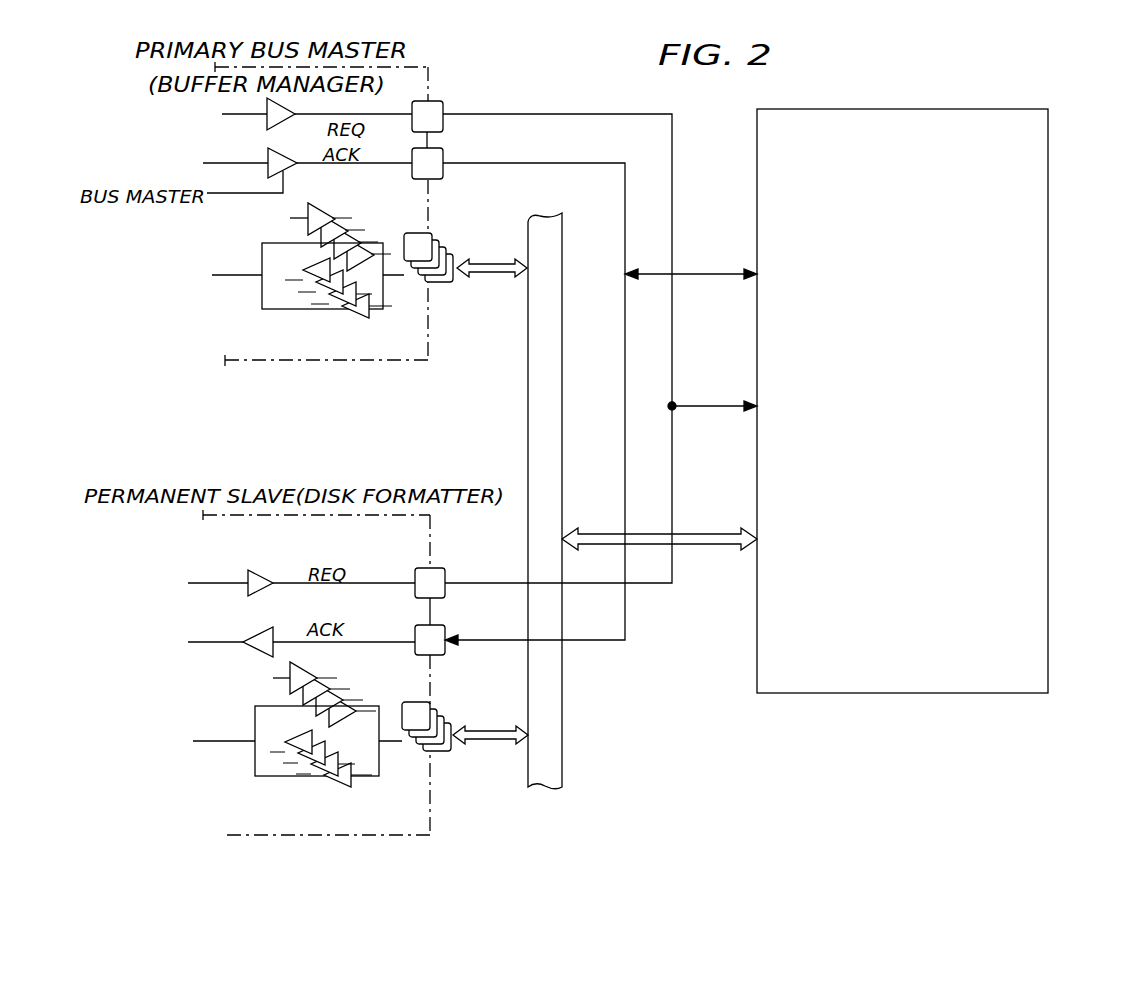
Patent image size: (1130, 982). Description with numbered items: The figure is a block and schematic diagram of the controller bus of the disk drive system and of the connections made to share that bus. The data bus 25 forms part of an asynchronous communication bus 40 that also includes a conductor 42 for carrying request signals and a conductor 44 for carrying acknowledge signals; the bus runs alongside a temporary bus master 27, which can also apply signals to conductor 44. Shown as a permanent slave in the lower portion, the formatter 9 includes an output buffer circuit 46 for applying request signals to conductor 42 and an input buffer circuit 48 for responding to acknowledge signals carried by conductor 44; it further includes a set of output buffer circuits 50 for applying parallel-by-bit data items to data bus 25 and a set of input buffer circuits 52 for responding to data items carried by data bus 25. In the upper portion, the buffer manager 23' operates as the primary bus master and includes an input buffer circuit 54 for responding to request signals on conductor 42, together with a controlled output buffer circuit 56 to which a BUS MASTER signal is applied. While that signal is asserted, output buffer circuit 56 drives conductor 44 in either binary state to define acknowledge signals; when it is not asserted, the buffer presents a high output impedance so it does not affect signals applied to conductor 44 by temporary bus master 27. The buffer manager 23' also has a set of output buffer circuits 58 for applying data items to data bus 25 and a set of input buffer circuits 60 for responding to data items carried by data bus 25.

The buffer manager 23' is at (363, 202).
The input buffer circuit 54 is at (279, 123).
The controlled output buffer circuit 56 is at (292, 180).
The set of output buffer circuits 58 is at (319, 206).
The set of input buffer circuits 60 is at (331, 318).
The formatter 9 is at (395, 813).
The output buffer circuit 46 is at (272, 543).
The input buffer circuit 48 is at (265, 630).
The set of output buffer circuits 50 is at (342, 669).
The set of input buffer circuits 52 is at (306, 782).
The data bus 25 is at (548, 748).
The asynchronous communication bus 40 is at (610, 340).
The conductor 42 is at (672, 480).
The conductor 44 is at (625, 480).
The temporary bus master 27 is at (1048, 190).